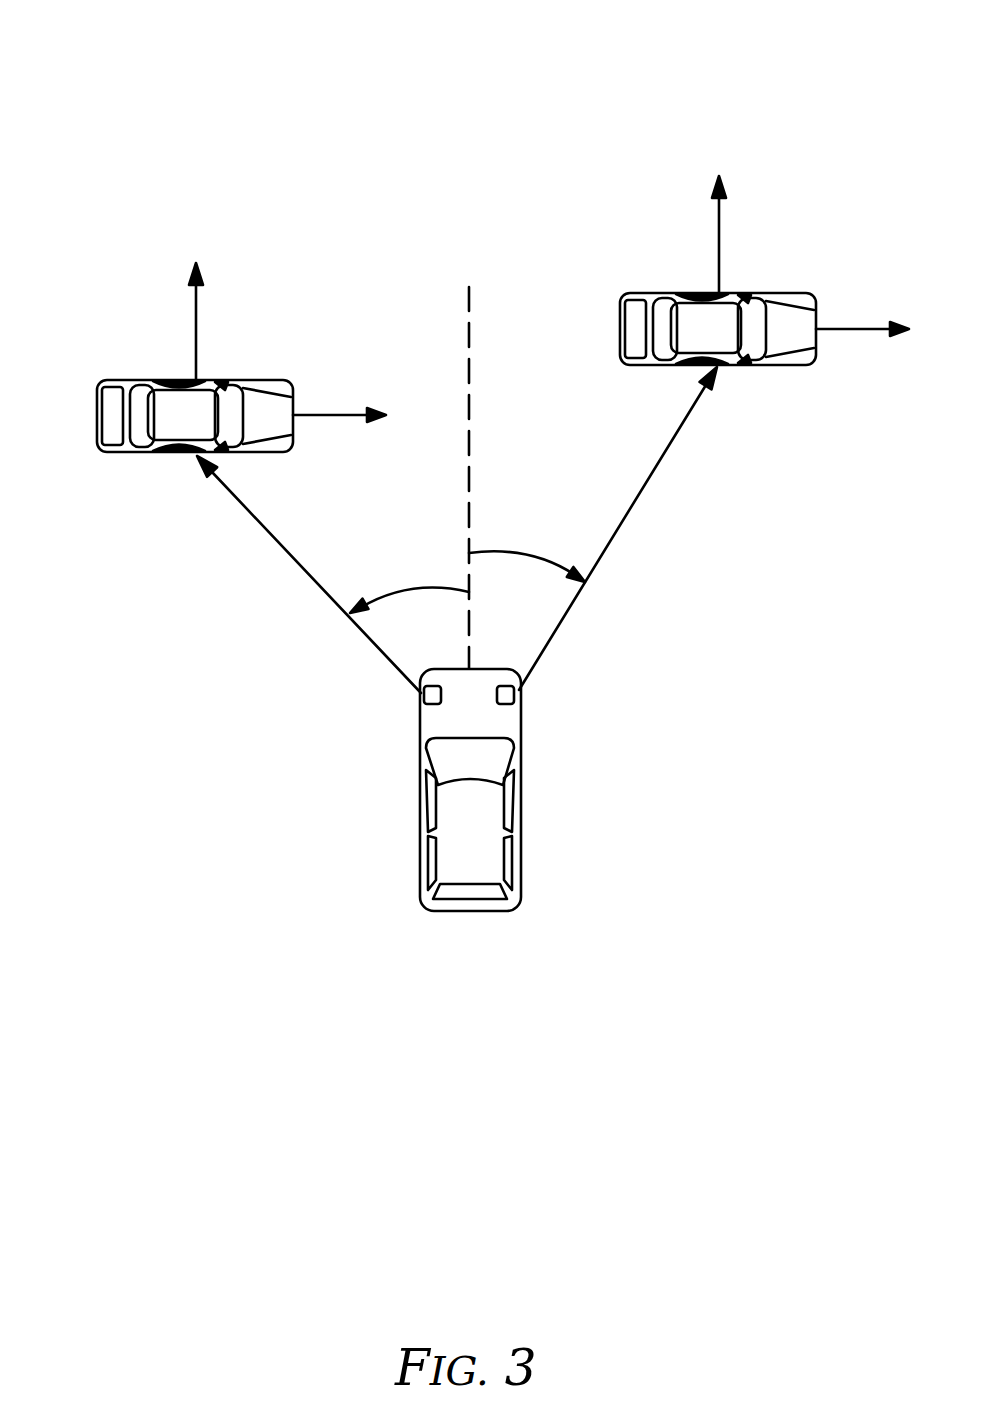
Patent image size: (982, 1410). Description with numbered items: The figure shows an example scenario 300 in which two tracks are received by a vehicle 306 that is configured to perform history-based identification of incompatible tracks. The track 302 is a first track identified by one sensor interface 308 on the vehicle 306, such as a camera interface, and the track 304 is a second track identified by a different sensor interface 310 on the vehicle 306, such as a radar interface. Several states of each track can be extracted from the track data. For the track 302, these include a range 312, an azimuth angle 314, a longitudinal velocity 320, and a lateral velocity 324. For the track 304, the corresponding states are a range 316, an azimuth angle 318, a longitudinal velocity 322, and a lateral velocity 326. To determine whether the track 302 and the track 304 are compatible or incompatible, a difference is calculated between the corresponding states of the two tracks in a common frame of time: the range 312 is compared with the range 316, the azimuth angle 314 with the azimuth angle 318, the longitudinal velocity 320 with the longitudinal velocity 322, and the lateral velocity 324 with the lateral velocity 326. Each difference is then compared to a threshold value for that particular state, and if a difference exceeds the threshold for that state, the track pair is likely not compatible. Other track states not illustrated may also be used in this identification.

The example scenario 300 is at (127, 58).
The track 302 is at (107, 380).
The track 304 is at (810, 292).
The vehicle 306 is at (475, 814).
The sensor interface 308 is at (422, 707).
The sensor interface 310 is at (509, 704).
The range 312 is at (324, 600).
The azimuth angle 314 is at (412, 587).
The range 316 is at (610, 593).
The azimuth angle 318 is at (507, 552).
The longitudinal velocity 320 is at (325, 415).
The longitudinal velocity 322 is at (865, 333).
The lateral velocity 324 is at (197, 313).
The lateral velocity 326 is at (718, 225).